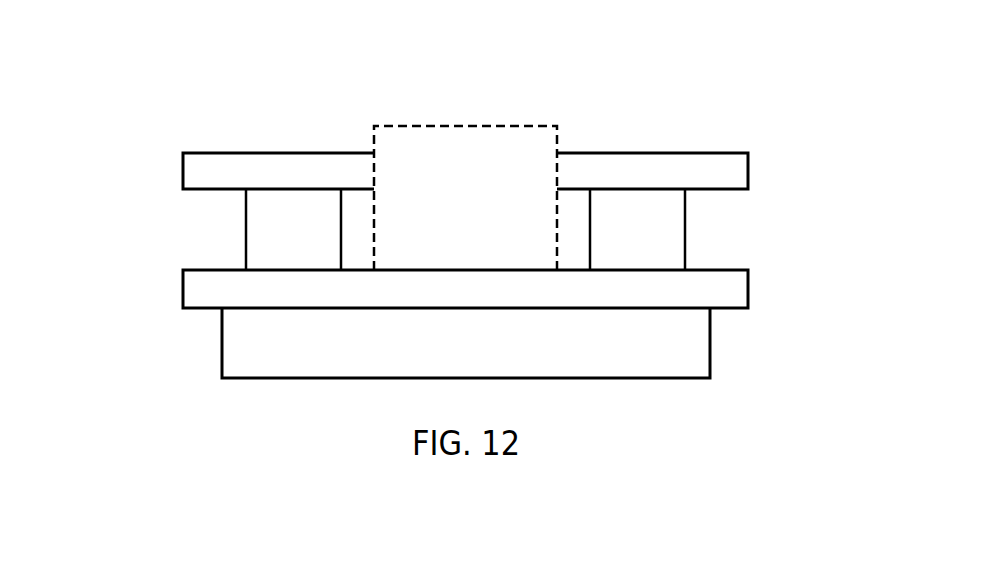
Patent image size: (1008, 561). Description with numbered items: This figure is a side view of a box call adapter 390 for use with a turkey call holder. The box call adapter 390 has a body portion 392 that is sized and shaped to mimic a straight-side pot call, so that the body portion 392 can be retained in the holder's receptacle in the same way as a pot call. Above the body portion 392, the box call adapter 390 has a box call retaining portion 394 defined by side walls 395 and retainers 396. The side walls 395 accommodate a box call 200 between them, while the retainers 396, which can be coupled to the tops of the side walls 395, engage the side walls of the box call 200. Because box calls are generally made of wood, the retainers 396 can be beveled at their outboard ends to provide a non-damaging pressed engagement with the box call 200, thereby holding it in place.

The box call 200 is at (517, 125).
The box call adapter 390 is at (118, 153).
The body portion 392 is at (823, 272).
The box call retaining portion 394 is at (805, 153).
The side walls 395 is at (258, 248).
The retainers 396 is at (230, 172).